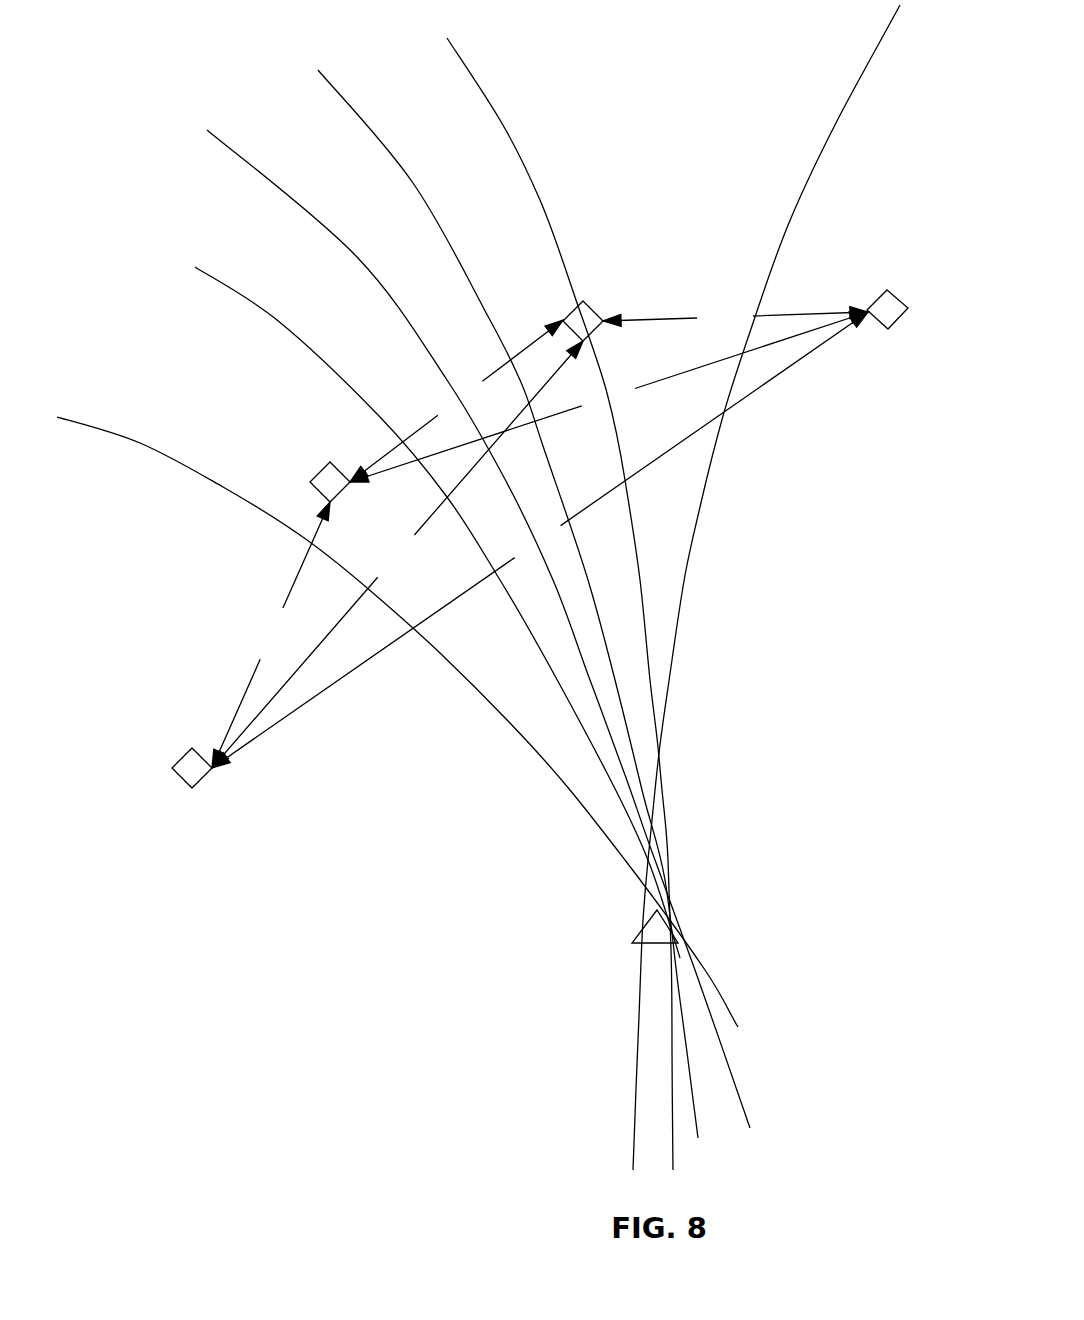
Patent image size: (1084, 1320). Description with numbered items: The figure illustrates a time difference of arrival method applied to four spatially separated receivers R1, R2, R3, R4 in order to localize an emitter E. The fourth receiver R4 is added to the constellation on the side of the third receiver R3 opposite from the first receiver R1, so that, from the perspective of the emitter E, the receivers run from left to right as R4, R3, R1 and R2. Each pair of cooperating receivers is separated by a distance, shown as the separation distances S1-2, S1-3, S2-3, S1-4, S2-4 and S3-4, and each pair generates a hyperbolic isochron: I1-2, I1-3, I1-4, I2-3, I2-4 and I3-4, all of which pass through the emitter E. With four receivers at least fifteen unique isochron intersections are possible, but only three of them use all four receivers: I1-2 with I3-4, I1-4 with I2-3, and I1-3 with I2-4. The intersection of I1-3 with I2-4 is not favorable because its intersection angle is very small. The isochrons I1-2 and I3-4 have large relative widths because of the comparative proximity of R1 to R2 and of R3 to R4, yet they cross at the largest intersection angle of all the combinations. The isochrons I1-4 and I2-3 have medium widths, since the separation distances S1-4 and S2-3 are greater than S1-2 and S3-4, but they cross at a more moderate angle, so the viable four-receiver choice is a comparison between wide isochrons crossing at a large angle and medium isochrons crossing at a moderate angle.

The first receiver R1 is at (584, 301).
The second receiver R2 is at (895, 290).
The third receiver R3 is at (331, 461).
The fourth receiver R4 is at (193, 746).
The emitter E is at (678, 932).
The separation distance between R1 and R2 S1-2 is at (735, 317).
The separation distance between R1 and R3 S1-3 is at (456, 401).
The separation distance between R2 and R3 S2-3 is at (609, 397).
The separation distance between R1 and R4 S1-4 is at (397, 554).
The separation distance between R2 and R4 S2-4 is at (540, 540).
The separation distance between R3 and R4 S3-4 is at (271, 635).
The isochron for receivers R1 and R2 I1-2 is at (720, 430).
The isochron for receivers R1 and R3 I1-3 is at (360, 259).
The isochron for receivers R1 and R4 I1-4 is at (512, 602).
The isochron for receivers R2 and R3 I2-3 is at (502, 122).
The isochron for receivers R2 and R4 I2-4 is at (417, 184).
The isochron for receivers R3 and R4 I3-4 is at (470, 680).